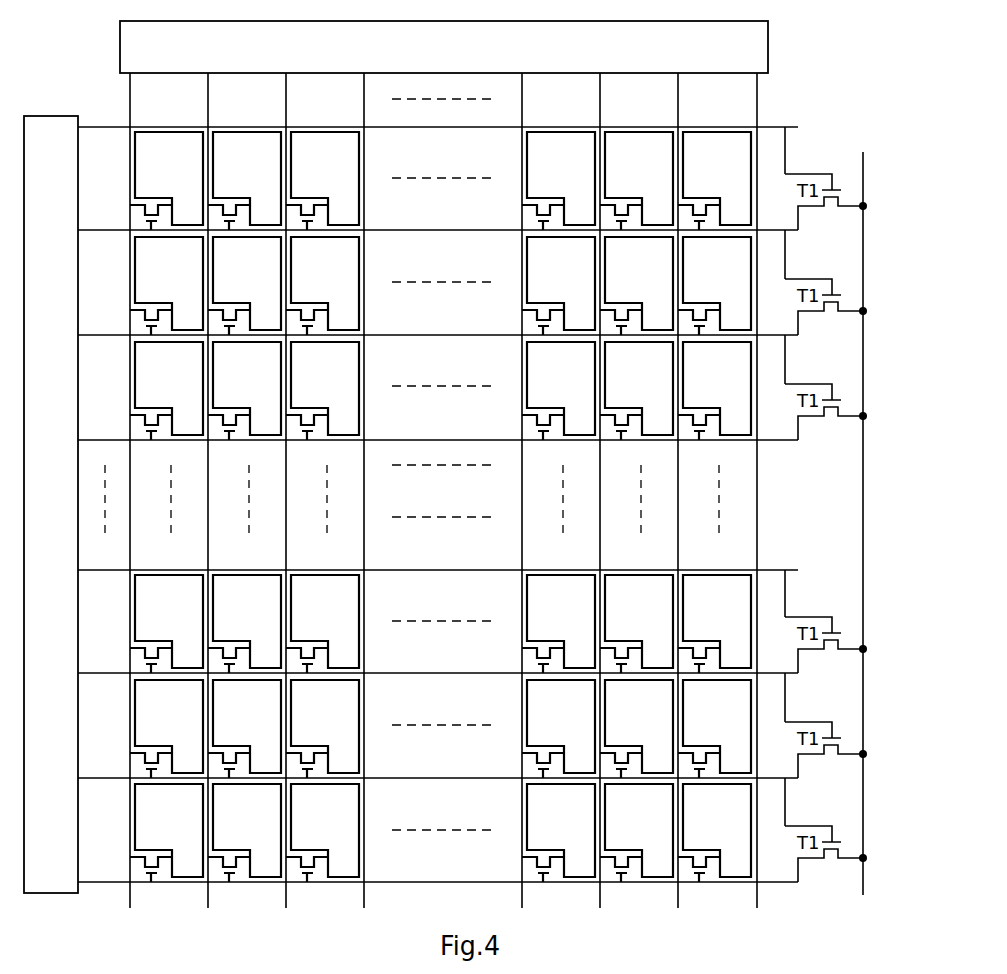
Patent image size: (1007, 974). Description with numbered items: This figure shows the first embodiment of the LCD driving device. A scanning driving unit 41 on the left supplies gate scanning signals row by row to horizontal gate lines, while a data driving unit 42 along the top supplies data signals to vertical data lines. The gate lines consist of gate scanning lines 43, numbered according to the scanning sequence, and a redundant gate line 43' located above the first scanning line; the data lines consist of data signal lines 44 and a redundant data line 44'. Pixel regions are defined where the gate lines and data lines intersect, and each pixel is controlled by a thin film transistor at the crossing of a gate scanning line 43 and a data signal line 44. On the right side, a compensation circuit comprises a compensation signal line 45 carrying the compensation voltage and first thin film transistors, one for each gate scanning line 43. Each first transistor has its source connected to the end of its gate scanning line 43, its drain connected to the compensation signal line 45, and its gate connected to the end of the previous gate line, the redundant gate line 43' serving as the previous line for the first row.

The scanning driving unit 41 is at (50, 116).
The data driving unit 42 is at (768, 40).
The gate scanning lines 43 is at (438, 546).
The redundant gate line 43' is at (438, 103).
The data signal lines 44 is at (426, 490).
The redundant data line 44' is at (777, 490).
The compensation signal line 45 is at (864, 187).